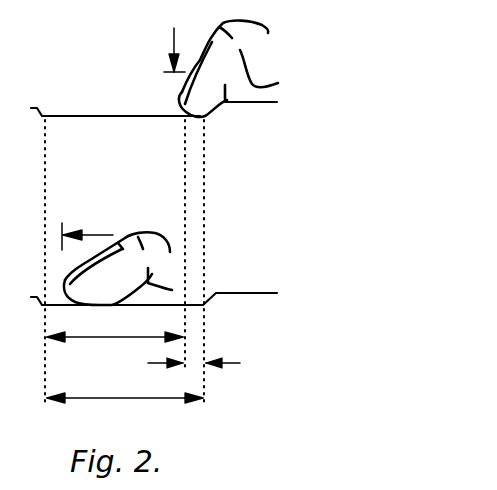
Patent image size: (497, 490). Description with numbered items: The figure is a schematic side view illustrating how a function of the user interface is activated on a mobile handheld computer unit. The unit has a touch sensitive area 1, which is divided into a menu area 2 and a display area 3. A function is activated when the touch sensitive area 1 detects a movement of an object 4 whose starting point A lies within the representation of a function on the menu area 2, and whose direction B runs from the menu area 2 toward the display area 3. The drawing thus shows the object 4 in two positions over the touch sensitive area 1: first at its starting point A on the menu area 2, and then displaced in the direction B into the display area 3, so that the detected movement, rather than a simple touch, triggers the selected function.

The touch sensitive area 1 is at (125, 414).
The menu area 2 is at (202, 369).
The display area 3 is at (115, 352).
The object 4 is at (226, 99).
The starting point A is at (166, 49).
The direction B is at (87, 230).